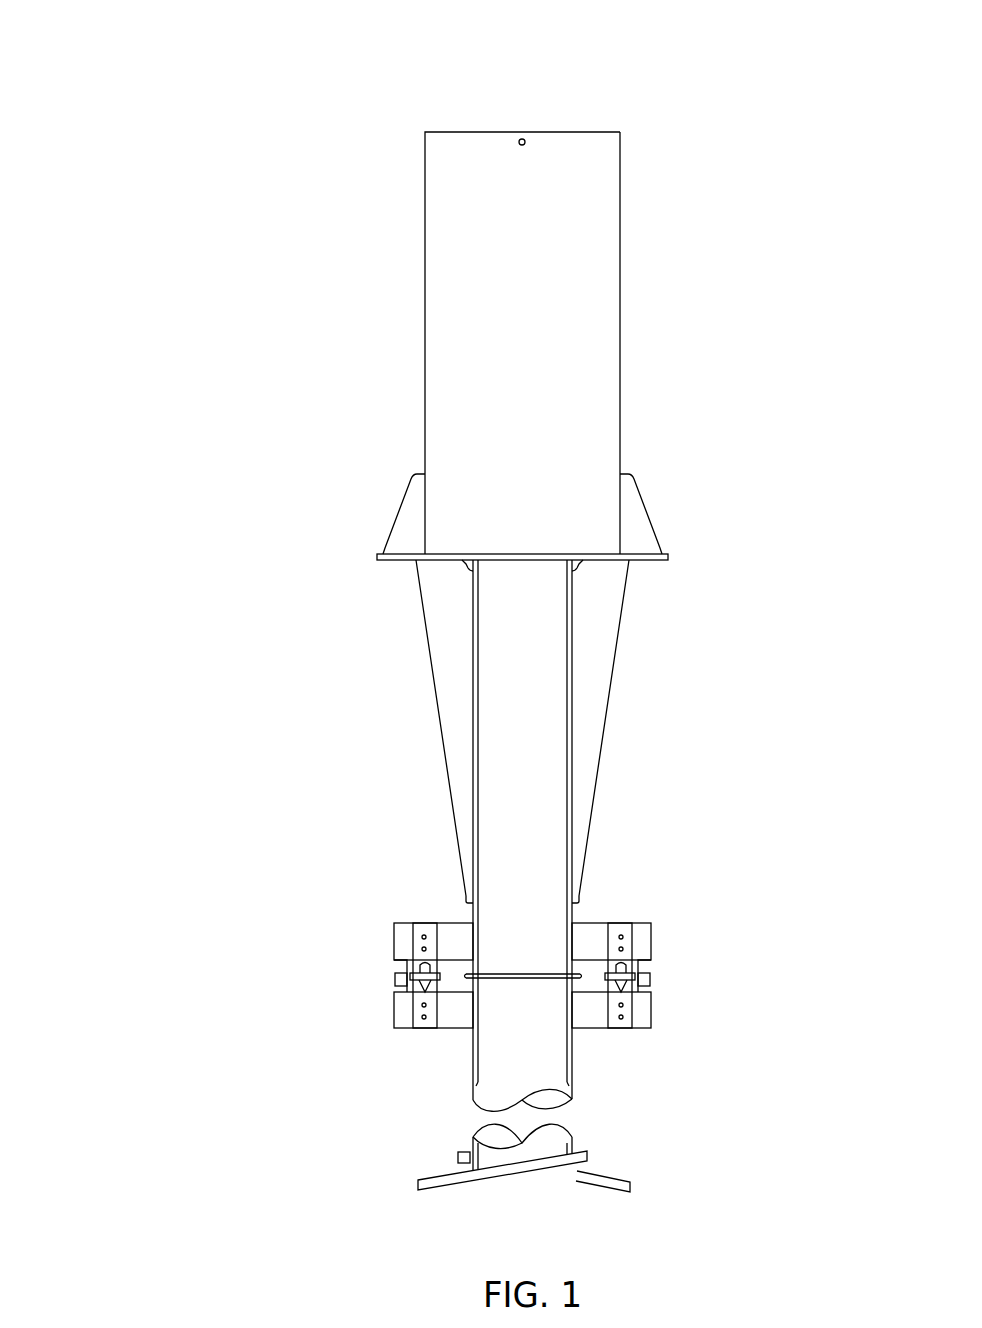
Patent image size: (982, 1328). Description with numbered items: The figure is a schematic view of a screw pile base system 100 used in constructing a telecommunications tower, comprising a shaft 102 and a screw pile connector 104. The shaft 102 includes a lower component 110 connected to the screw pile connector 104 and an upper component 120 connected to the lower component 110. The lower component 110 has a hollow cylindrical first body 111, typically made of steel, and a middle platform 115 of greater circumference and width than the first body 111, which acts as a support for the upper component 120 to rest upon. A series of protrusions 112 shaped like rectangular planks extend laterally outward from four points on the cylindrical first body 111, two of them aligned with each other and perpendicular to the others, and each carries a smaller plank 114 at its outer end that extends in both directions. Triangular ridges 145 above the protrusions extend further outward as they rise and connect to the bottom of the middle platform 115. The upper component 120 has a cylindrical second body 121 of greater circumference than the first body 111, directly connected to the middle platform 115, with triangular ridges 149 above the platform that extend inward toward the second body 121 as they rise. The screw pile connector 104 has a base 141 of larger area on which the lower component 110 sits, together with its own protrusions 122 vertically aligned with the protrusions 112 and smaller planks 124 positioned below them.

The screw pile base system 100 is at (265, 110).
The shaft 102 is at (318, 393).
The screw pile connector 104 is at (433, 1062).
The lower component 110 is at (614, 762).
The cylindrical first body 111 is at (630, 417).
The protrusions 112 is at (380, 930).
The smaller plank 114 is at (405, 973).
The middle platform 115 is at (668, 540).
The upper component 120 is at (405, 325).
The cylindrical second body 121 is at (582, 682).
The protrusions 122 is at (660, 1043).
The smaller plank 124 is at (667, 998).
The base 141 is at (605, 983).
The triangular ridges 145 is at (417, 695).
The triangular ridges 149 is at (385, 520).